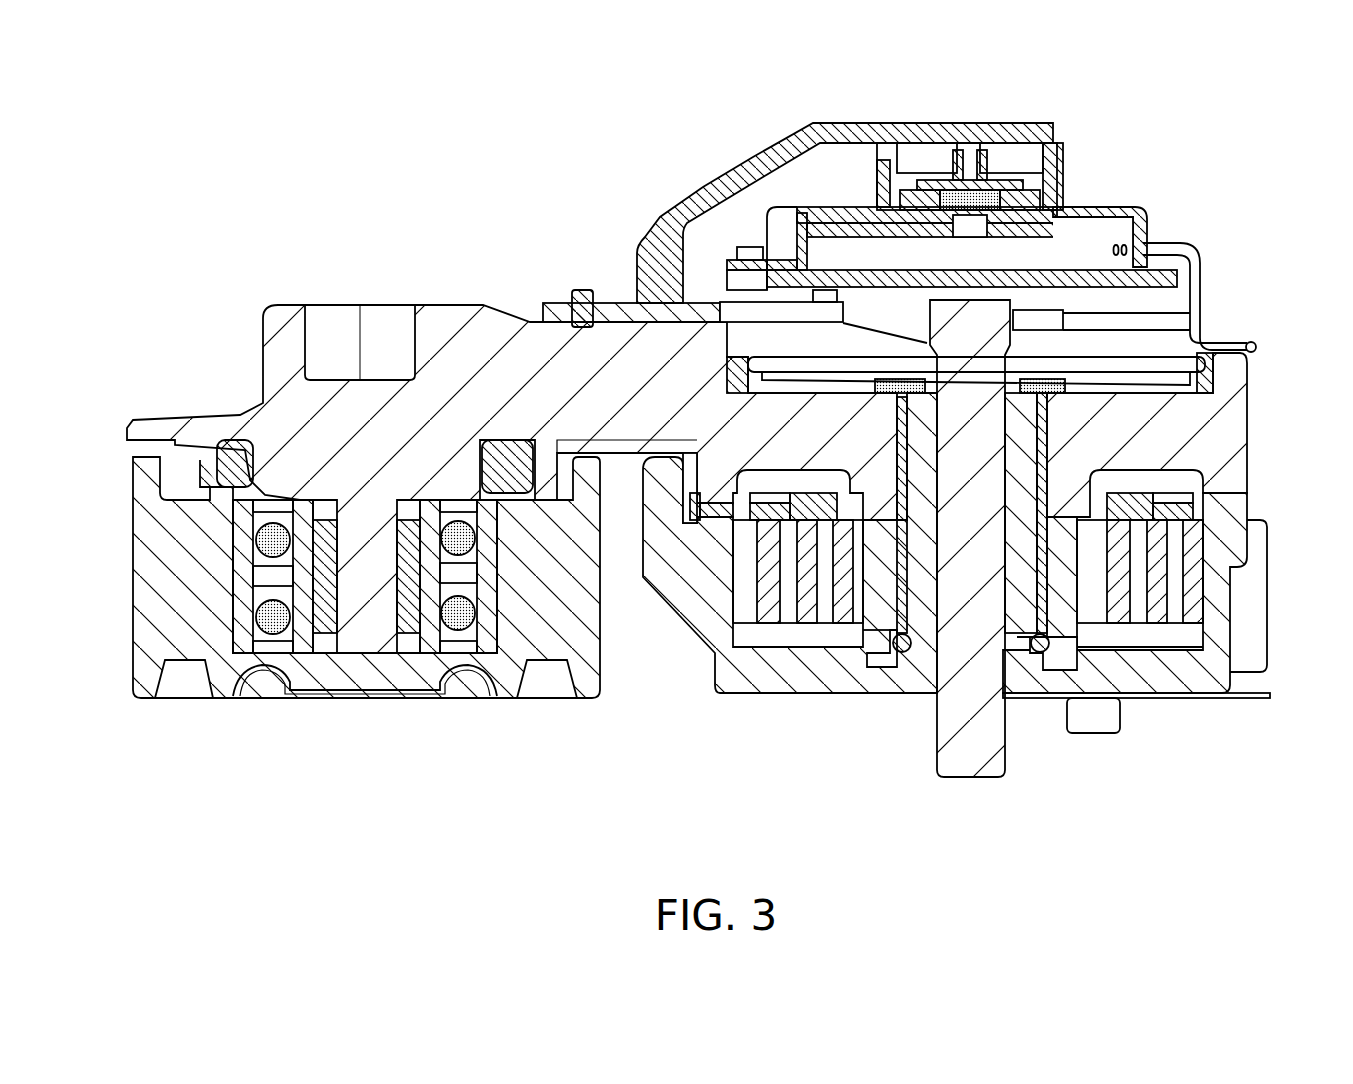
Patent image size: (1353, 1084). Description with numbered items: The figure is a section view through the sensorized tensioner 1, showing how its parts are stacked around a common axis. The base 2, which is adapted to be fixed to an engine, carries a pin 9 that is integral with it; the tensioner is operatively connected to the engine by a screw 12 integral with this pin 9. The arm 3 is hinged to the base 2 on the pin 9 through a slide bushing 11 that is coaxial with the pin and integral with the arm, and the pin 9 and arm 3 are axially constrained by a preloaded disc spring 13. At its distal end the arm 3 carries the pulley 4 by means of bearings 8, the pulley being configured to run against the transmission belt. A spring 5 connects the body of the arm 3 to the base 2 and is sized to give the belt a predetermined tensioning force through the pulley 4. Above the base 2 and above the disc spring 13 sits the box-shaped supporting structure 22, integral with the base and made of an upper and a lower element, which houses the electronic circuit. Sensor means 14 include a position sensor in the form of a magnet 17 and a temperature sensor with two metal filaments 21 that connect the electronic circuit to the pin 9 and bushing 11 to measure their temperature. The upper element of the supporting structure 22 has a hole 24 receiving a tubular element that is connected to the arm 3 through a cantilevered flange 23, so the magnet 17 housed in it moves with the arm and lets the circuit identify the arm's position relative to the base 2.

The sensorized tensioner 1 is at (170, 141).
The base 2 is at (1185, 677).
The arm 3 is at (258, 340).
The pulley 4 is at (543, 640).
The spring 5 is at (1155, 580).
The bearings 8 is at (458, 628).
The pin 9 is at (1040, 575).
The slide bushing 11 is at (893, 575).
The screw 12 is at (960, 765).
The disc spring 13 is at (1113, 360).
The sensor means 14 is at (972, 178).
The magnet 17 is at (940, 190).
The metal filaments 21 is at (1215, 320).
The supporting structure 22 is at (1180, 283).
The flange 23 is at (760, 160).
The hole 24 is at (1108, 215).